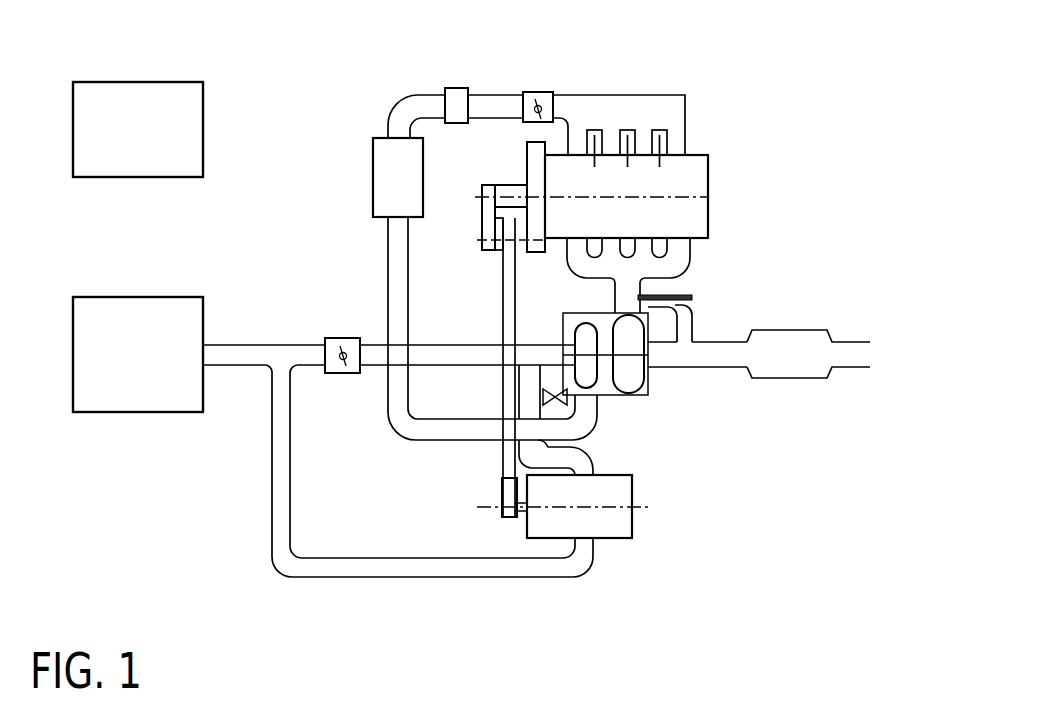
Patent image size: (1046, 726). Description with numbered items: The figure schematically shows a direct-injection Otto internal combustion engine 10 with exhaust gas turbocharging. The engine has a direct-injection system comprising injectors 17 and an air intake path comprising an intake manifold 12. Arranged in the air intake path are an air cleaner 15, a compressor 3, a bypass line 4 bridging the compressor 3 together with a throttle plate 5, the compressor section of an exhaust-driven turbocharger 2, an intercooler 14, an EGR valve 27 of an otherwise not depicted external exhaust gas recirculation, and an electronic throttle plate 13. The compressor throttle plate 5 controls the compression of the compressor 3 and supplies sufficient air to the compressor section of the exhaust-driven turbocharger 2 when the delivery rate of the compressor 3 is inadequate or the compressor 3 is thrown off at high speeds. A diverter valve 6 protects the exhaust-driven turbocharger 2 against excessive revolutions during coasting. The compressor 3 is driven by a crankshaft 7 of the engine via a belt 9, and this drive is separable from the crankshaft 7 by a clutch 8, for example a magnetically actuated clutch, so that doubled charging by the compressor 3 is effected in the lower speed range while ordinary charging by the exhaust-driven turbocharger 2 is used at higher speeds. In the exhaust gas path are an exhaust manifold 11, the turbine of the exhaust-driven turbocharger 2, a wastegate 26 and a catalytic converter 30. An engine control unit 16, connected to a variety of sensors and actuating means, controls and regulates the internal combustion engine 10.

The exhaust-driven turbocharger 2 is at (630, 383).
The compressor 3 is at (615, 527).
The bypass line 4 is at (443, 355).
The throttle plate 5 is at (348, 343).
The diverter valve 6 is at (565, 402).
The crankshaft 7 is at (507, 192).
The clutch 8 is at (500, 233).
The belt 9 is at (489, 215).
The internal combustion engine 10 is at (698, 180).
The exhaust manifold 11 is at (677, 252).
The intake manifold 12 is at (675, 132).
The electronic throttle plate 13 is at (528, 97).
The intercooler 14 is at (385, 157).
The air cleaner 15 is at (144, 402).
The engine control unit 16 is at (143, 93).
The injectors 17 is at (662, 165).
The wastegate 26 is at (668, 295).
The EGR valve 27 is at (457, 97).
The catalytic converter 30 is at (778, 363).